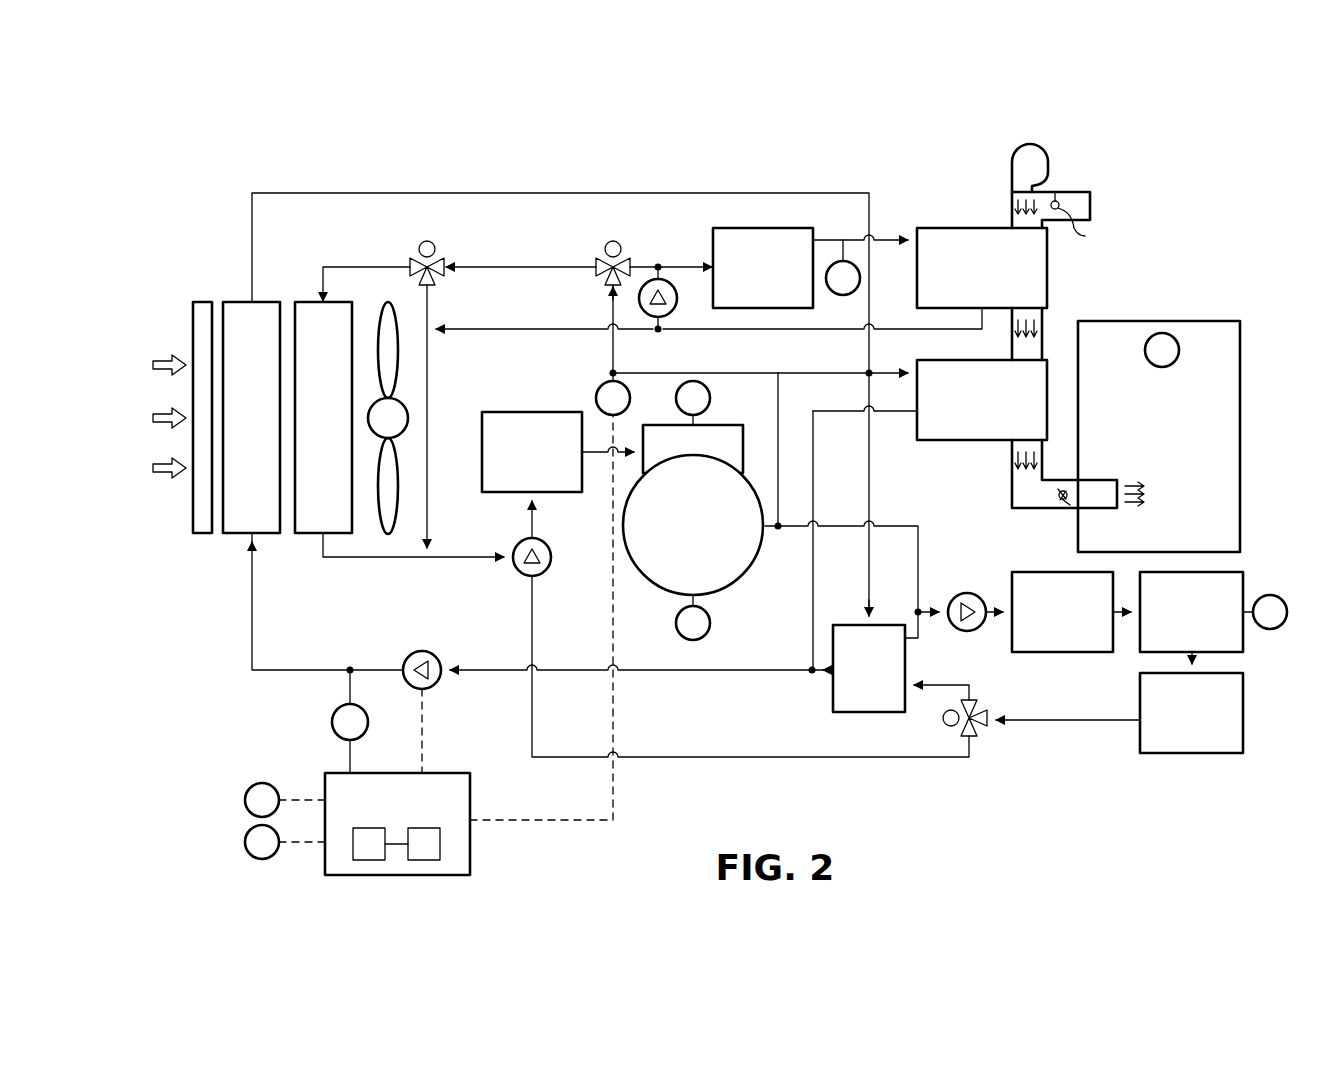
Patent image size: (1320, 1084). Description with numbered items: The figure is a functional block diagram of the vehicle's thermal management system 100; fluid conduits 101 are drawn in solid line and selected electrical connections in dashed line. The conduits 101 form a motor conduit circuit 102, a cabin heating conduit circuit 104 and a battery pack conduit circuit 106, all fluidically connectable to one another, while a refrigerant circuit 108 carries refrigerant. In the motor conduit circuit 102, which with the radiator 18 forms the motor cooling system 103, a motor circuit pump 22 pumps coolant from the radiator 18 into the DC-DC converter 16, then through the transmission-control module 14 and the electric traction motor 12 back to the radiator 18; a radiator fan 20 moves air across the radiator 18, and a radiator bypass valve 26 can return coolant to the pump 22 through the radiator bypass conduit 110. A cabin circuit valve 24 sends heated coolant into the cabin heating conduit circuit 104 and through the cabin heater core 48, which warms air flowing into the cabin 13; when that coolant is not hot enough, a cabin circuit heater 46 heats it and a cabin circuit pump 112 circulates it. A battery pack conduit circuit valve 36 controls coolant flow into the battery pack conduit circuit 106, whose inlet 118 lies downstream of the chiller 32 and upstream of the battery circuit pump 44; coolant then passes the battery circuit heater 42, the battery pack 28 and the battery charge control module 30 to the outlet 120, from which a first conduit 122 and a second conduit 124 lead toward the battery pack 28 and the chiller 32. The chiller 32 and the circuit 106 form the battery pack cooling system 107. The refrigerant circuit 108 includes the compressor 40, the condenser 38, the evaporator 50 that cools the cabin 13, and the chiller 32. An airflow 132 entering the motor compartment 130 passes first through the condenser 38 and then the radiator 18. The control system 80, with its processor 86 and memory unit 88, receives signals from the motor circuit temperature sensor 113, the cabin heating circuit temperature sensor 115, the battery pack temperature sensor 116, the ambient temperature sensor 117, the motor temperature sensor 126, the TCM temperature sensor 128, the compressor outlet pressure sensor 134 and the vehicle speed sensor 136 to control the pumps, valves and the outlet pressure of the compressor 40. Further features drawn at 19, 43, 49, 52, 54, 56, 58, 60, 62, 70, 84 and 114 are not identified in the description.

The electric traction motor 12 is at (693, 525).
The cabin 13 is at (1159, 436).
The transmission-control module 14 is at (693, 449).
The DC-DC converter 16 is at (532, 452).
The radiator 18 is at (323, 417).
The powertrain cooling loop 19 is at (523, 392).
The radiator fan 20 is at (388, 418).
The motor circuit pump 22 is at (546, 541).
The cabin circuit valve 24 is at (613, 241).
The radiator bypass valve 26 is at (427, 241).
The battery pack 28 is at (1191, 612).
The battery charge control module 30 is at (1191, 713).
The chiller 32 is at (869, 668).
The battery pack conduit circuit valve 36 is at (944, 722).
The condenser 38 is at (251, 417).
The compressor 40 is at (422, 650).
The battery circuit heater 42 is at (1062, 612).
The battery coolant loop 43 is at (989, 527).
The battery circuit pump 44 is at (961, 593).
The cabin circuit heater 46 is at (763, 268).
The cabin heater core 48 is at (982, 268).
The cooling loop 49 is at (406, 640).
The evaporator 50 is at (982, 400).
The air duct 52 is at (1064, 474).
The blower 54 is at (1030, 168).
The air inlet duct 56 is at (1090, 205).
The damper 58 is at (1080, 218).
The vent 60 is at (1097, 508).
The damper 62 is at (1060, 499).
The HVAC system 70 is at (967, 172).
The control system 80 is at (397, 824).
The cabin temperature sensor 84 is at (1145, 352).
The processor 86 is at (369, 844).
The memory unit 88 is at (412, 844).
The thermal management system 100 is at (538, 173).
The fluid conduits 101 is at (534, 590).
The motor conduit circuit 102 is at (463, 529).
The motor cooling system 103 is at (299, 546).
The cabin heating conduit circuit 104 is at (887, 190).
The battery pack conduit circuit 106 is at (1003, 702).
The battery pack cooling system 107 is at (815, 694).
The refrigerant circuit 108 is at (625, 684).
The radiator bypass conduit 110 is at (428, 355).
The cabin circuit pump 112 is at (677, 292).
The motor circuit temperature sensor 113 is at (597, 391).
The coolant conduit 114 is at (886, 524).
The cabin heating circuit temperature sensor 115 is at (844, 295).
The battery pack temperature sensor 116 is at (1273, 595).
The ambient temperature sensor 117 is at (248, 790).
The battery pack conduit circuit inlet 118 is at (920, 607).
The battery pack conduit circuit outlet 120 is at (977, 736).
The first conduit 122 is at (1059, 722).
The second conduit 124 is at (941, 684).
The motor temperature sensor 126 is at (710, 621).
The TCM temperature sensor 128 is at (710, 396).
The motor compartment 130 is at (203, 535).
The airflow 132 is at (168, 357).
The pressure sensor 134 is at (332, 722).
The vehicle speed sensor 136 is at (262, 860).